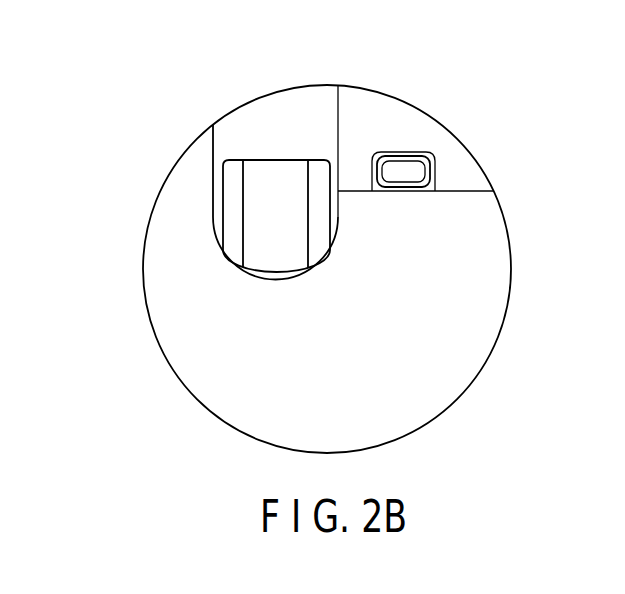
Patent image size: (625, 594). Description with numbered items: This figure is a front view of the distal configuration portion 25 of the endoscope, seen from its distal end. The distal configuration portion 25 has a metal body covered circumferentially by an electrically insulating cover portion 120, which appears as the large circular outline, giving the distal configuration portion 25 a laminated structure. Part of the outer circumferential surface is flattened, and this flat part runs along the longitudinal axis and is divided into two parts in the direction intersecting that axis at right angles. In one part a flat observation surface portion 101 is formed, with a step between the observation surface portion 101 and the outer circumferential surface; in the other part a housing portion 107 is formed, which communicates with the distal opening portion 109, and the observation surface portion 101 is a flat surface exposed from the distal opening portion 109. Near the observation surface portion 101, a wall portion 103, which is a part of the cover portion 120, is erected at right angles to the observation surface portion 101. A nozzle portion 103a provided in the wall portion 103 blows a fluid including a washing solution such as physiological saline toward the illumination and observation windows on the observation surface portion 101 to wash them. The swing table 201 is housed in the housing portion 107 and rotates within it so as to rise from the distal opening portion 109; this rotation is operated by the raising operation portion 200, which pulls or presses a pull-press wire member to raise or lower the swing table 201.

The distal configuration portion 25 is at (176, 425).
The observation surface portion 101 is at (472, 191).
The wall portion 103 is at (470, 175).
The nozzle portion 103a is at (407, 170).
The housing portion 107 is at (250, 124).
The distal opening portion 109 is at (270, 93).
The cover portion 120 is at (178, 352).
The raising operation portion 200 is at (191, 216).
The swing table 201 is at (230, 207).